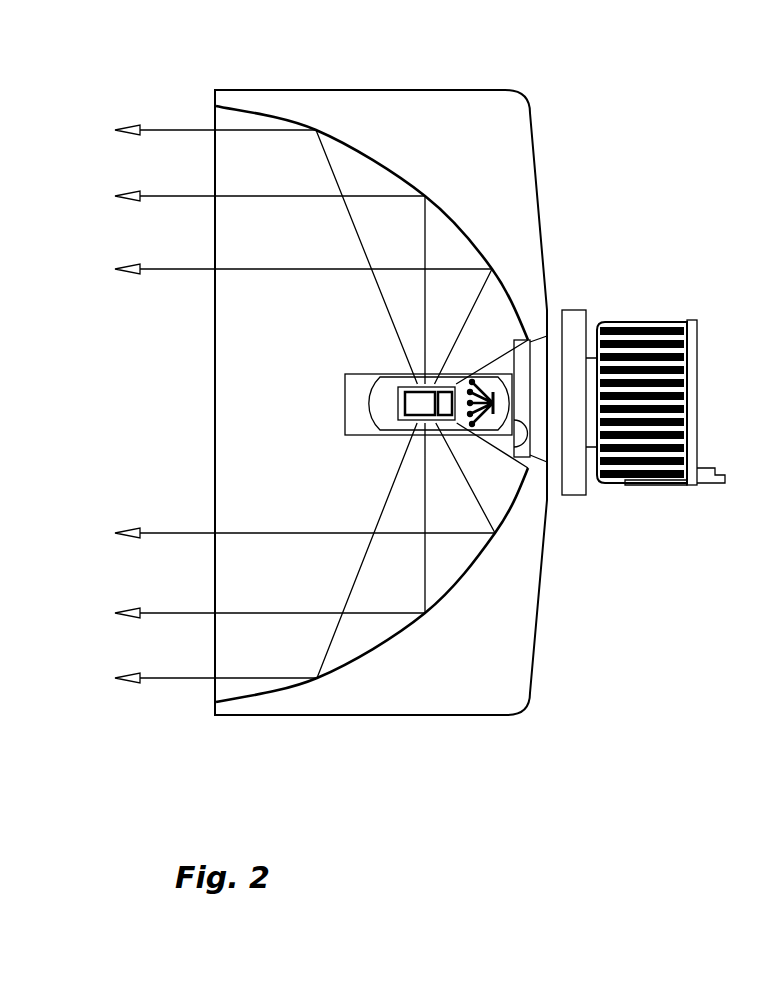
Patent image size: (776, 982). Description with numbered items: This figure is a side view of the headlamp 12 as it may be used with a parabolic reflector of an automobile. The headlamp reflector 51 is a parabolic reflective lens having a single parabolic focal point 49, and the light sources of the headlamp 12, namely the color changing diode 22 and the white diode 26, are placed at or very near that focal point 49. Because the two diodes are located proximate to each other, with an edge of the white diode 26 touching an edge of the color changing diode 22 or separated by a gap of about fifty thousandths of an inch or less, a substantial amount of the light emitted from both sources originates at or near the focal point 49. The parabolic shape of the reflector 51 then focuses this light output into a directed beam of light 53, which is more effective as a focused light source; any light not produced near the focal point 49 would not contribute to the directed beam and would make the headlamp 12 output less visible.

The headlamp 12 is at (628, 287).
The color changing diode 22 is at (435, 413).
The white diode 26 is at (445, 398).
The parabolic focal point 49 is at (395, 365).
The headlamp reflector 51 is at (373, 135).
The directed beam of light 53 is at (115, 168).